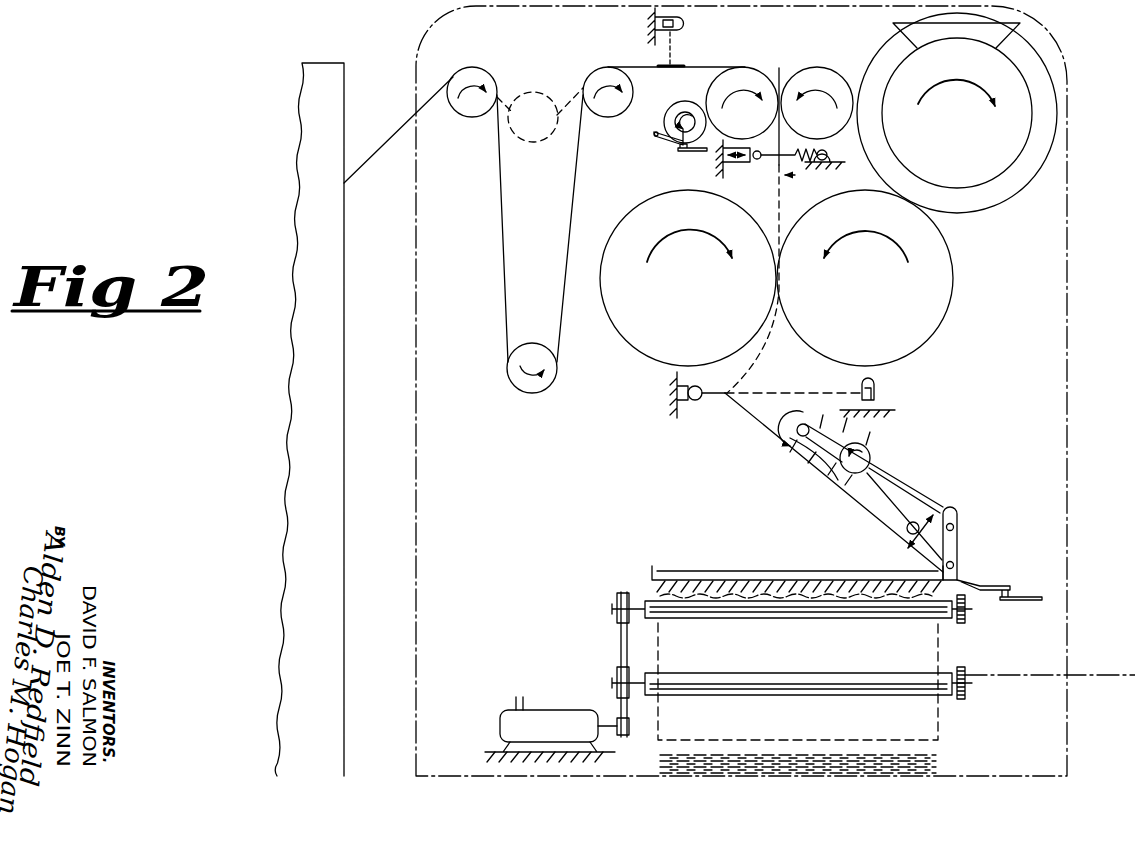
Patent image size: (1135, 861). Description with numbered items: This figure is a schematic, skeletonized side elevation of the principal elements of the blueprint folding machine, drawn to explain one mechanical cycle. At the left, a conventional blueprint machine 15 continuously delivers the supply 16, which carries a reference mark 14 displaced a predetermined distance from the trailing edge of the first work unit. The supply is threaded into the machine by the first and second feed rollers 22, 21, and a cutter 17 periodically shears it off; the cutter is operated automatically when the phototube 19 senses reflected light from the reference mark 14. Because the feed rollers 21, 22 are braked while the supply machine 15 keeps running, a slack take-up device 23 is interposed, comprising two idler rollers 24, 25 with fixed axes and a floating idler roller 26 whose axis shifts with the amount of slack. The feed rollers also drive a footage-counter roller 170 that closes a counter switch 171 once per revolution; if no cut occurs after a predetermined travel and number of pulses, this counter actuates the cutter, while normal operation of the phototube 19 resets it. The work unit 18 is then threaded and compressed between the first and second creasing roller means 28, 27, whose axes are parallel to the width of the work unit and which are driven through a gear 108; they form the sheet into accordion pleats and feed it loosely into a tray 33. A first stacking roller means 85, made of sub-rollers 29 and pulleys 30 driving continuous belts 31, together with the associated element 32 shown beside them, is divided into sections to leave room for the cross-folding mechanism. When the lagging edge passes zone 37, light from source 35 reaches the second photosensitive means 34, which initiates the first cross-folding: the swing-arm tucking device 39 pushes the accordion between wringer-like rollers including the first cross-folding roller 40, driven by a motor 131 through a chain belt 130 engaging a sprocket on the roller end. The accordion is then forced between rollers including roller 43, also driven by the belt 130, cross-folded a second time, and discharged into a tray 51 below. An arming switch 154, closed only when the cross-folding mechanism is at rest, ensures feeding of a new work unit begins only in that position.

The reference mark 14 is at (673, 65).
The blueprint machine 15 is at (338, 272).
The supply 16 is at (362, 163).
The cutter 17 is at (769, 171).
The work unit 18 is at (781, 206).
The phototube 19 is at (683, 23).
The second feed roller 21 is at (748, 70).
The first feed roller 22 is at (811, 68).
The slack take-up device 23 is at (478, 146).
The idler roller 24 is at (490, 75).
The idler roller 25 is at (592, 72).
The floating idler roller 26 is at (524, 391).
The second creasing roller means 27 is at (617, 334).
The first creasing roller means 28 is at (959, 294).
The sub-roller 29 is at (872, 455).
The pulley 30 is at (798, 437).
The continuous belt 31 is at (815, 453).
The arm swing arc 32 is at (840, 480).
The tray 33 is at (650, 572).
The second photosensitive means 34 is at (875, 389).
The light source 35 is at (696, 401).
The zone 37 is at (760, 392).
The tucking device 39 is at (905, 526).
The first cross-folding roller 40 is at (855, 619).
The second cross-folding roller 43 is at (751, 676).
The tray 51 is at (1078, 672).
The first stacking roller means 85 is at (891, 438).
The gear 108 is at (975, 163).
The chain belt 130 is at (620, 640).
The motor 131 is at (593, 708).
The arming switch 154 is at (1030, 601).
The footage-counter roller 170 is at (686, 103).
The counter switch 171 is at (695, 151).